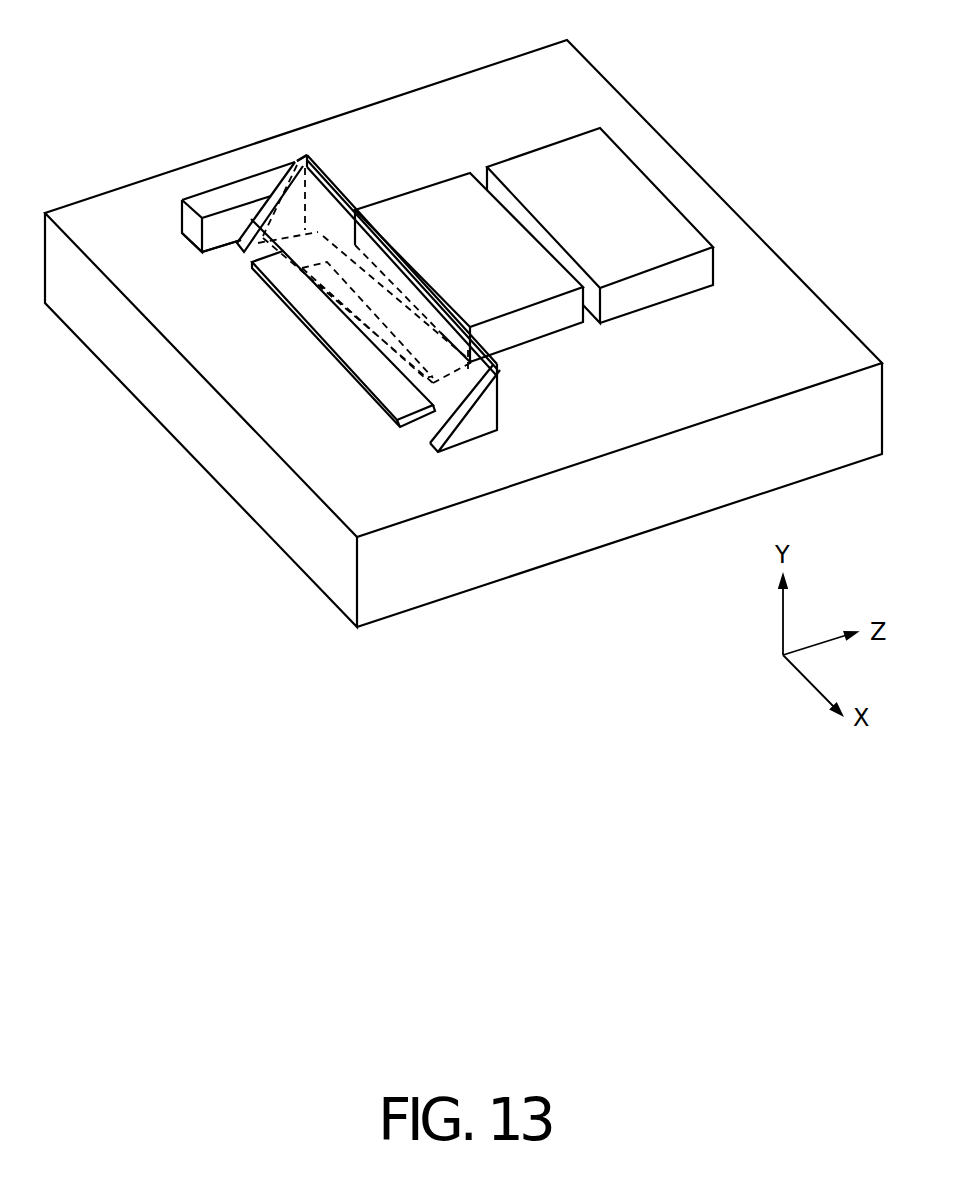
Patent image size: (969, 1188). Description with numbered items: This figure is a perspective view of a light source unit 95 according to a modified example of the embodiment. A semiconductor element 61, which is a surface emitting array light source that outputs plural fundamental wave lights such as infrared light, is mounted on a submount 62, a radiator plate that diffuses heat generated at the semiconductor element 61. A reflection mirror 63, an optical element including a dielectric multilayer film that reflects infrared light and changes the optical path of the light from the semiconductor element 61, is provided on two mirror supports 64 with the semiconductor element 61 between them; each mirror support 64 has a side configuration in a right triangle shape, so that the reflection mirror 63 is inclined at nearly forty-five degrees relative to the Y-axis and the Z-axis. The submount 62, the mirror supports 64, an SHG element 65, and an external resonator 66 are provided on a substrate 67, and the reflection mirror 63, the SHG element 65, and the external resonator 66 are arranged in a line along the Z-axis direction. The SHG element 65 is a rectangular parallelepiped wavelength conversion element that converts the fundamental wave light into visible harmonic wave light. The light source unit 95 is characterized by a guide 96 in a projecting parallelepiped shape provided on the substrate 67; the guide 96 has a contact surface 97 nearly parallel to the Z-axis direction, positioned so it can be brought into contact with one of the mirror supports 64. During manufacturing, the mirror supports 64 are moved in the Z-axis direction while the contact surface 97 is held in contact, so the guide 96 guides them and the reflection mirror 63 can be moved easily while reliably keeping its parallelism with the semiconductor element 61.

The light source unit 95 is at (112, 88).
The guide 96 is at (238, 174).
The contact surface 97 is at (222, 244).
The semiconductor element 61 is at (350, 303).
The submount 62 is at (357, 352).
The reflection mirror 63 is at (493, 367).
The mirror supports 64 is at (247, 236).
The SHG element 65 is at (420, 220).
The external resonator 66 is at (625, 202).
The substrate 67 is at (785, 305).